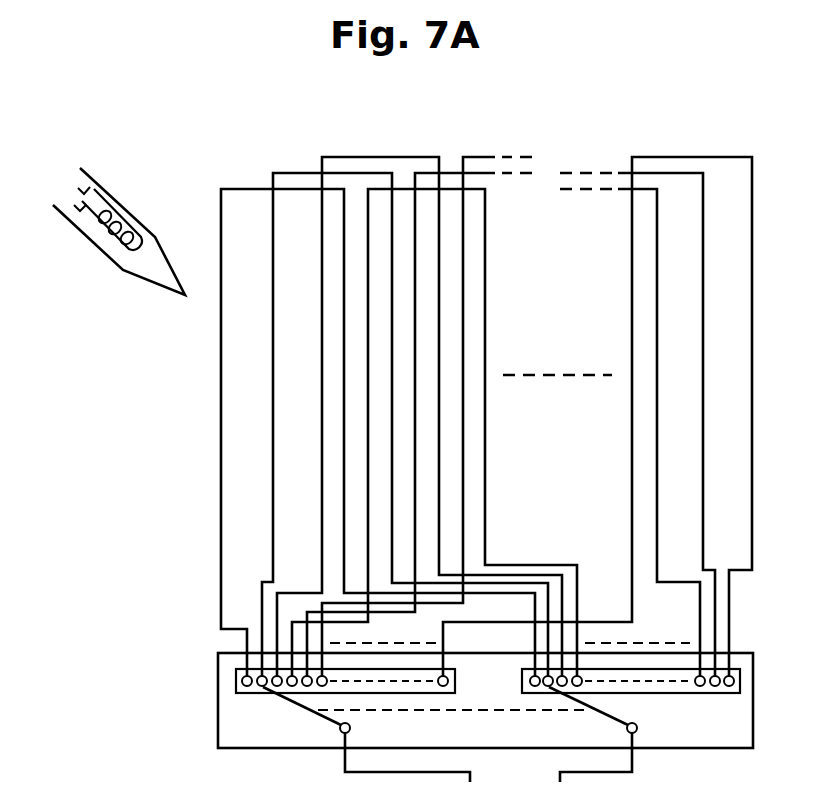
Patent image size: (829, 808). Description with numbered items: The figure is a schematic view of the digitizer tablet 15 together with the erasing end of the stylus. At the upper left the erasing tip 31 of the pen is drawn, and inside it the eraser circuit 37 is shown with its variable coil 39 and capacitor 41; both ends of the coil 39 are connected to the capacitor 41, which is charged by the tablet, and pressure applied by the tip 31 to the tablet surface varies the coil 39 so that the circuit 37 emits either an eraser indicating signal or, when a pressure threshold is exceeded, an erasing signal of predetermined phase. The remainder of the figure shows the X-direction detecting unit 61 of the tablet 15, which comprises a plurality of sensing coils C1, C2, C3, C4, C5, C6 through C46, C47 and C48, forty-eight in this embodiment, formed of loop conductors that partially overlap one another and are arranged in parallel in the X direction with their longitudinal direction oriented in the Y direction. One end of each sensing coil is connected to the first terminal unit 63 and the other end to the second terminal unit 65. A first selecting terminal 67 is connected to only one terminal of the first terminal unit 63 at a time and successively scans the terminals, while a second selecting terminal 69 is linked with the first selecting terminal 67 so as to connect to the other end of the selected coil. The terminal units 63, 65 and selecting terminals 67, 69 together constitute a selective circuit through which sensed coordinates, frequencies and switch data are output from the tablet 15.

The digitizer tablet 15 is at (136, 504).
The erasing tip 31 is at (160, 282).
The eraser circuit 37 is at (82, 229).
The variable coil 39 is at (128, 210).
The capacitor 41 is at (79, 188).
The X-direction detecting unit 61 is at (200, 423).
The first terminal unit 63 is at (238, 681).
The second terminal unit 65 is at (742, 679).
The first selecting terminal 67 is at (297, 709).
The second selecting terminal 69 is at (690, 710).
The sensing coil C1 is at (232, 189).
The sensing coil C2 is at (283, 173).
The sensing coil C3 is at (333, 157).
The sensing coil C4 is at (434, 432).
The sensing coil C5 is at (419, 424).
The sensing coil C6 is at (427, 416).
The sensing coil C46 is at (659, 432).
The sensing coil C47 is at (663, 173).
The sensing coil C48 is at (721, 157).